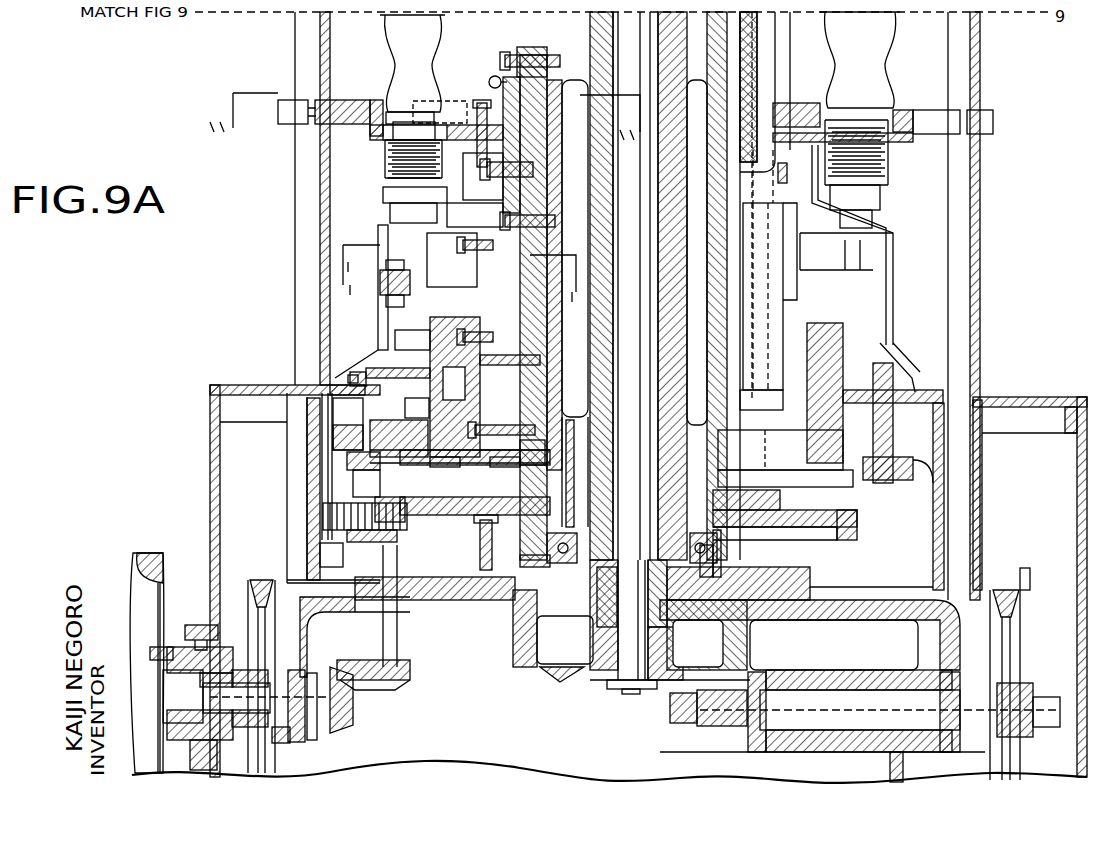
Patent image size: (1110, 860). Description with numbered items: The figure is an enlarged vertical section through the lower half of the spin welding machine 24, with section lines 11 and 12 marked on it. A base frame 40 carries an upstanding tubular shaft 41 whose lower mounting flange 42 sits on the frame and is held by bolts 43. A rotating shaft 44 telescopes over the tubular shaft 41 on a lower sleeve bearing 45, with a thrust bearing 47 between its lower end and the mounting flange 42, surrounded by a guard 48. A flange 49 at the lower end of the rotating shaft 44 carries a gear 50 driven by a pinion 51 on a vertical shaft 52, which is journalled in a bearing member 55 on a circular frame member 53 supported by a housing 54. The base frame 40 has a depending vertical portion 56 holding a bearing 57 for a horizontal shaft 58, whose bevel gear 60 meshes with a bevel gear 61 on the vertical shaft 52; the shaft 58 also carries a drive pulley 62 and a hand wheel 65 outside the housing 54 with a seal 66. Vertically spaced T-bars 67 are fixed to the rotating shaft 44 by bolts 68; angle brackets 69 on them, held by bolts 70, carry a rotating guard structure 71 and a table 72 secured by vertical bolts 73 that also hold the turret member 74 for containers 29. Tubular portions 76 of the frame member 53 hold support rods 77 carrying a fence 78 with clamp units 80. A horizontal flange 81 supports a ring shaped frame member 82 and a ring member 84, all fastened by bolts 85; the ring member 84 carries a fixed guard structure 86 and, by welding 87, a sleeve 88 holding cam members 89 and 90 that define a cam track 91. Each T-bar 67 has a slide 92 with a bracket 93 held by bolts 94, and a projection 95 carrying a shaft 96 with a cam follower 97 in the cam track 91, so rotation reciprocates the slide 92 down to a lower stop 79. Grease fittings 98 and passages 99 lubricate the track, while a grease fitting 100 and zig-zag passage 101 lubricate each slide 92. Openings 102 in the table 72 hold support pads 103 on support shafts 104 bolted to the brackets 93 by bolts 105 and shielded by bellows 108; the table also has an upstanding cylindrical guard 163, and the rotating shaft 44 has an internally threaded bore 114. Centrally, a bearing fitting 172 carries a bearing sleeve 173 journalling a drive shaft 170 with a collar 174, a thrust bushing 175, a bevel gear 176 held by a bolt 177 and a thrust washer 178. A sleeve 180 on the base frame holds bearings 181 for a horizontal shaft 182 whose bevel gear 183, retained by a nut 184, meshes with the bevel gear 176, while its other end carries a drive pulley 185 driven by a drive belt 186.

The section line 11 is at (425, 120).
The section line 12 is at (464, 277).
The spin welding machine 24 is at (296, 290).
The container 29 is at (382, 46).
The base frame 40 is at (514, 652).
The tubular shaft 41 is at (598, 380).
The mounting flange 42 is at (772, 588).
The bolt 43 is at (482, 556).
The rotating shaft 44 is at (556, 160).
The lower sleeve bearing 45 is at (698, 420).
The thrust bearing 47 is at (550, 546).
The guard 48 is at (722, 548).
The flange 49 is at (780, 494).
The gear 50 is at (426, 508).
The pinion 51 is at (386, 462).
The vertical shaft 52 is at (398, 620).
The circular frame member 53 is at (306, 514).
The housing 54 is at (210, 498).
The bearing member 55 is at (400, 554).
The depending vertical portion 56 is at (306, 614).
The bearing 57 is at (290, 736).
The horizontal shaft 58 is at (328, 730).
The bevel gear 60 is at (356, 708).
The bevel gear 61 is at (400, 680).
The drive pulley 62 is at (242, 580).
The hand wheel 65 is at (154, 556).
The seal 66 is at (204, 624).
The T-bar 67 is at (540, 200).
The bolt 68 is at (514, 52).
The angle bracket 69 is at (636, 172).
The bolt 70 is at (482, 176).
The guard structure 71 is at (896, 254).
The table 72 is at (393, 130).
The vertical bolt 73 is at (480, 100).
The turret member 74 is at (466, 105).
The tubular portion 76 is at (288, 468).
The support rod 77 is at (312, 224).
The fence 78 is at (368, 100).
The lower stop 79 is at (530, 458).
The clamp unit 80 is at (300, 124).
The horizontal flange 81 is at (344, 470).
The ring shaped frame member 82 is at (356, 447).
The ring member 84 is at (362, 366).
The bolt 85 is at (880, 438).
The guard structure 86 is at (384, 316).
The welding 87 is at (412, 342).
The sleeve 88 is at (426, 320).
The cam member 89 is at (439, 472).
The cam member 90 is at (465, 375).
The cam track 91 is at (399, 427).
The slide 92 is at (776, 400).
The bracket 93 is at (386, 290).
The bolt 94 is at (424, 330).
The projection 95 is at (498, 420).
The shaft 96 is at (490, 460).
The cam follower 97 is at (455, 458).
The grease fitting 98 is at (348, 378).
The grease passage 99 is at (348, 424).
The grease fitting 100 is at (489, 80).
The grease passage 101 is at (528, 56).
The opening 102 is at (388, 165).
The support pad 103 is at (430, 112).
The support shaft 104 is at (436, 228).
The bolt 105 is at (392, 306).
The bellows 108 is at (385, 190).
The internally threaded bore 114 is at (760, 60).
The cylindrical guard 163 is at (500, 30).
The drive shaft 170 is at (785, 458).
The bearing fitting 172 is at (565, 640).
The bearing sleeve 173 is at (670, 620).
The collar 174 is at (716, 566).
The thrust bushing 175 is at (529, 562).
The bevel gear 176 is at (578, 684).
The bolt 177 is at (622, 692).
The thrust washer 178 is at (698, 650).
The sleeve 180 is at (826, 656).
The bearing 181 is at (754, 660).
The horizontal shaft 182 is at (812, 750).
The bevel gear 183 is at (732, 728).
The nut 184 is at (684, 724).
The drive pulley 185 is at (1020, 640).
The drive belt 186 is at (1020, 578).